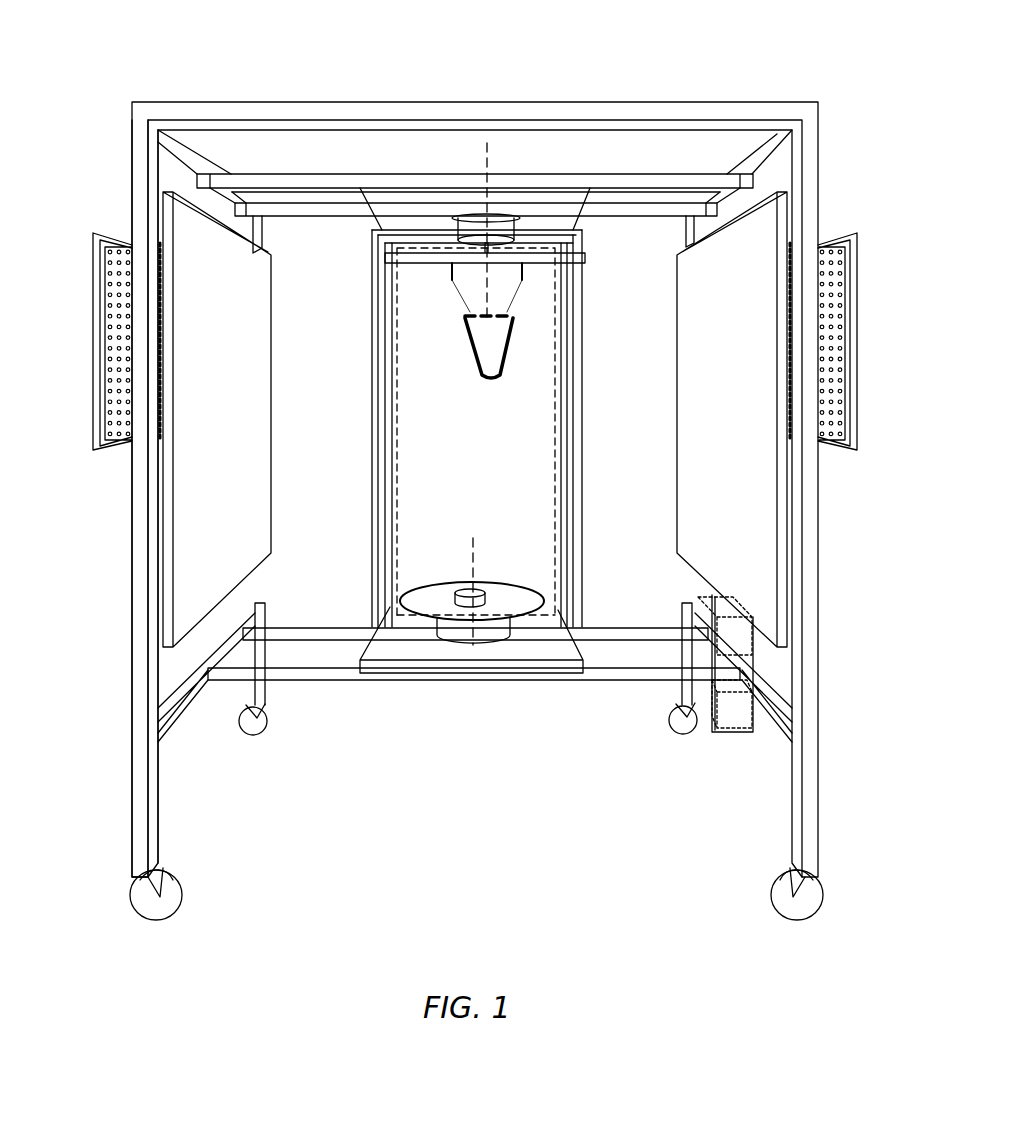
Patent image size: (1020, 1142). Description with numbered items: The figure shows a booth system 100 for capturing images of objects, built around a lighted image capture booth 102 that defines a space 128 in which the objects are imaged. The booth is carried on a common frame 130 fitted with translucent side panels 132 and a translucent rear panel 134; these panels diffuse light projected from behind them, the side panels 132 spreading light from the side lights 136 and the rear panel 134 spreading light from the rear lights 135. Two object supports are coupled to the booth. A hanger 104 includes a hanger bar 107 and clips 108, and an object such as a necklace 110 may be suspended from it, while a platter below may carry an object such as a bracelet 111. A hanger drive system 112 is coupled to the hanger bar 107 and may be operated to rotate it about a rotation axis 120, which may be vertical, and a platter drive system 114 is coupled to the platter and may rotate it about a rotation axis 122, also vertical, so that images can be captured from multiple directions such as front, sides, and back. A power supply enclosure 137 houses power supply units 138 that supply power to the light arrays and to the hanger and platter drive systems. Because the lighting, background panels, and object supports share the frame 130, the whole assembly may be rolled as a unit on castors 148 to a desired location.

The booth system 100 is at (262, 63).
The image capture booth 102 is at (753, 103).
The hanger 104 is at (578, 254).
The hanger bar 107 is at (585, 260).
The clips 108 is at (452, 280).
The necklace 110 is at (490, 381).
The bracelet 111 is at (478, 589).
The hanger drive system 112 is at (470, 228).
The platter drive system 114 is at (462, 637).
The rotation axis 120 is at (492, 158).
The rotation axis 122 is at (471, 540).
The space 128 is at (475, 235).
The frame 130 is at (158, 812).
The side panels 132 is at (475, 419).
The rear panel 134 is at (565, 492).
The rear lights 135 is at (476, 532).
The side lights 136 is at (108, 374).
The power supply enclosure 137 is at (715, 733).
The power supply units 138 is at (742, 725).
The castors 148 is at (778, 895).